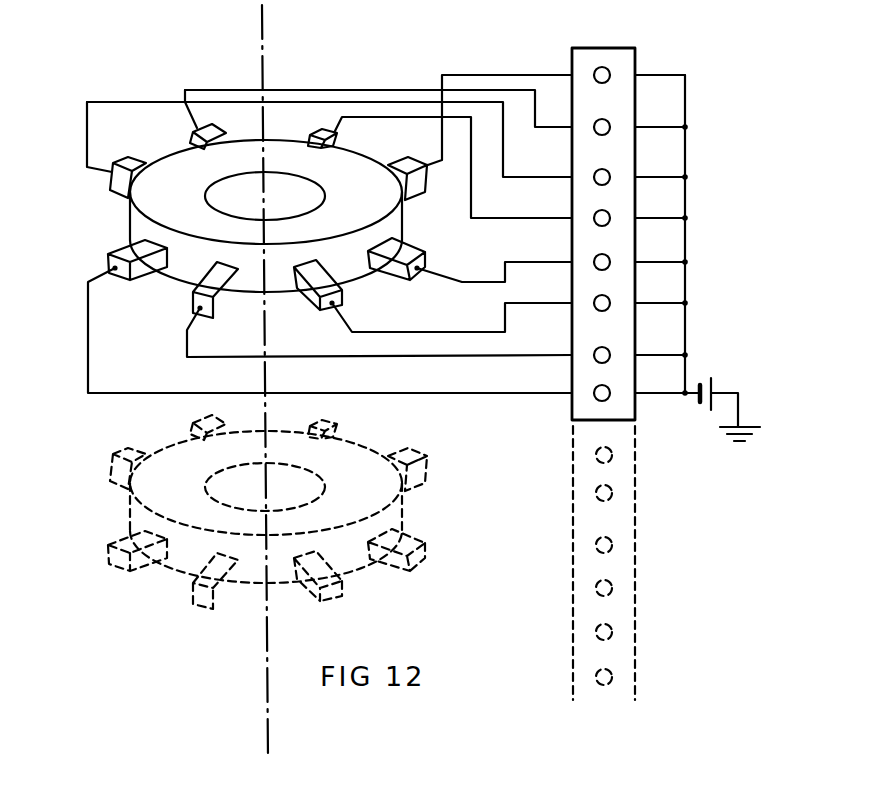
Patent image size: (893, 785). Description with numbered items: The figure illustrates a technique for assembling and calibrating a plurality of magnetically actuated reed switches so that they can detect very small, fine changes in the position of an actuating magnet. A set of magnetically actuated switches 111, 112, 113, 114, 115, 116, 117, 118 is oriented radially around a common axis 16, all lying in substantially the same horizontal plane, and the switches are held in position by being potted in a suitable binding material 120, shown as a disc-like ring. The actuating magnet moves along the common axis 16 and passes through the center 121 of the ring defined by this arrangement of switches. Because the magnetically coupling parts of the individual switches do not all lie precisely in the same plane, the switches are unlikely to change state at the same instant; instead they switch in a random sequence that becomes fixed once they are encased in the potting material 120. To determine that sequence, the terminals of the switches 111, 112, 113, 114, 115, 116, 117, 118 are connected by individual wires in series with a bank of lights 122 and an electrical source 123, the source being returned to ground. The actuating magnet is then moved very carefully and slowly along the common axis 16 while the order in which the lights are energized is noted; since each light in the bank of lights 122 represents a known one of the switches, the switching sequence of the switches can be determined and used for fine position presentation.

The axis 16 is at (262, 62).
The magnetically actuated switch 111 is at (127, 285).
The magnetically actuated switch 112 is at (216, 301).
The magnetically actuated switch 113 is at (344, 298).
The magnetically actuated switch 114 is at (424, 253).
The magnetically actuated switch 115 is at (423, 196).
The magnetically actuated switch 116 is at (337, 133).
The magnetically actuated switch 117 is at (212, 127).
The magnetically actuated switch 118 is at (125, 159).
The binding material 120 is at (153, 203).
The center 121 is at (316, 203).
The bank of lights 122 is at (590, 56).
The electrical source 123 is at (707, 368).